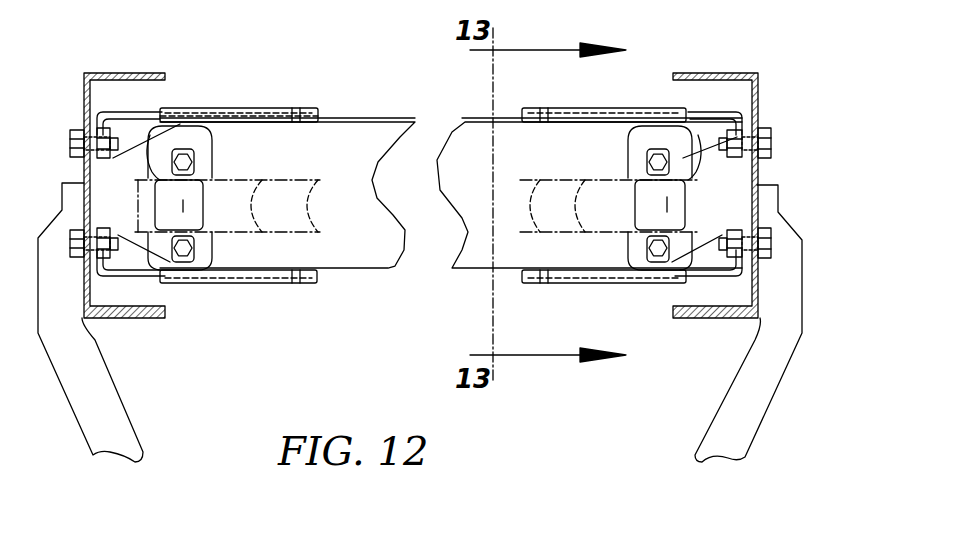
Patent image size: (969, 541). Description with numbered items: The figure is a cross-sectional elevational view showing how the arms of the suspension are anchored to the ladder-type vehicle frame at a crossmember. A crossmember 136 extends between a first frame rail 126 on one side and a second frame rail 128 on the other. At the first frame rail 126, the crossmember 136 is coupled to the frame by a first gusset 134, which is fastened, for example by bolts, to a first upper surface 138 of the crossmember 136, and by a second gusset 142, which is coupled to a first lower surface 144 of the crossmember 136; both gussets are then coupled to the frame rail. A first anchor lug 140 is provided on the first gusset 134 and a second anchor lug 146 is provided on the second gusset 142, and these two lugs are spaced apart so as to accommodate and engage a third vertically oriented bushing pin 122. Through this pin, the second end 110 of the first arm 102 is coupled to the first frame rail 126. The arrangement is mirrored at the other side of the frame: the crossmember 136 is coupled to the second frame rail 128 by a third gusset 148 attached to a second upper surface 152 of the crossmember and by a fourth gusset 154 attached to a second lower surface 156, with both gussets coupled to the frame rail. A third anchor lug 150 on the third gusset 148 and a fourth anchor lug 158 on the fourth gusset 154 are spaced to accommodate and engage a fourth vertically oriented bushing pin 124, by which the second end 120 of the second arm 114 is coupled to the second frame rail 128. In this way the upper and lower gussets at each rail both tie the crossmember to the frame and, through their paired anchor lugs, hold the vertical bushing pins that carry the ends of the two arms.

The first arm 102 is at (250, 232).
The second end of first arm 110 is at (228, 202).
The second arm 114 is at (580, 175).
The second end of second arm 120 is at (600, 210).
The third vertically oriented bushing pin 122 is at (165, 208).
The fourth vertically oriented bushing pin 124 is at (667, 207).
The first frame rail 126 is at (92, 72).
The second frame rail 128 is at (720, 73).
The first gusset 134 is at (205, 108).
The crossmember 136 is at (380, 121).
The first upper surface 138 is at (232, 140).
The first anchor lug 140 is at (152, 166).
The second gusset 142 is at (137, 277).
The first lower surface 144 is at (345, 290).
The second anchor lug 146 is at (157, 243).
The third gusset 148 is at (702, 110).
The third anchor lug 150 is at (740, 148).
The second upper surface 152 is at (578, 108).
The fourth gusset 154 is at (697, 280).
The second lower surface 156 is at (530, 293).
The fourth anchor lug 158 is at (685, 255).